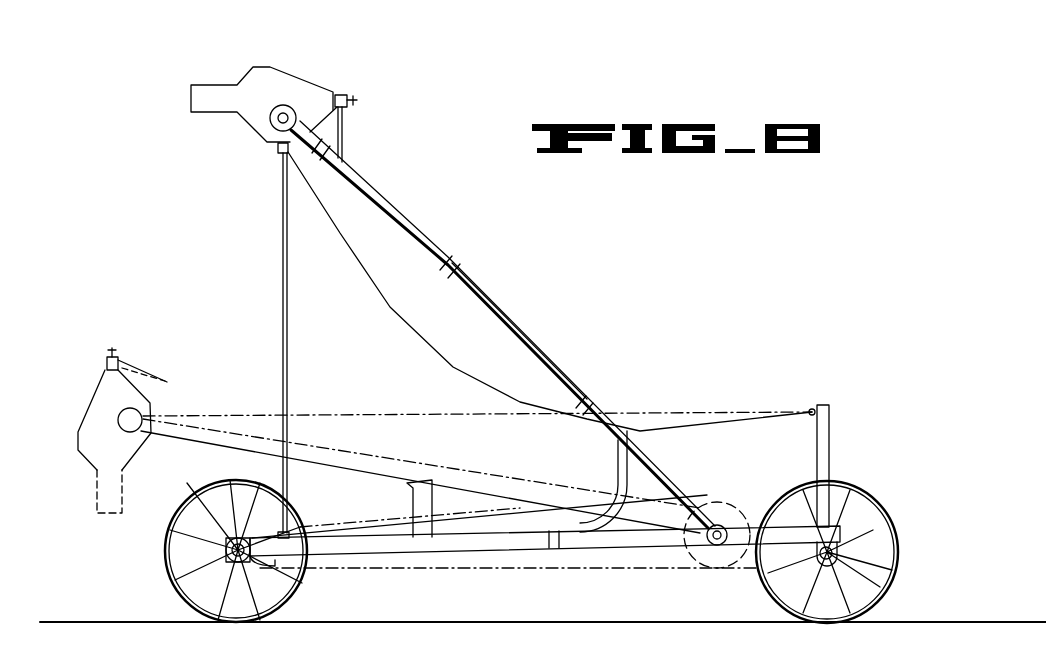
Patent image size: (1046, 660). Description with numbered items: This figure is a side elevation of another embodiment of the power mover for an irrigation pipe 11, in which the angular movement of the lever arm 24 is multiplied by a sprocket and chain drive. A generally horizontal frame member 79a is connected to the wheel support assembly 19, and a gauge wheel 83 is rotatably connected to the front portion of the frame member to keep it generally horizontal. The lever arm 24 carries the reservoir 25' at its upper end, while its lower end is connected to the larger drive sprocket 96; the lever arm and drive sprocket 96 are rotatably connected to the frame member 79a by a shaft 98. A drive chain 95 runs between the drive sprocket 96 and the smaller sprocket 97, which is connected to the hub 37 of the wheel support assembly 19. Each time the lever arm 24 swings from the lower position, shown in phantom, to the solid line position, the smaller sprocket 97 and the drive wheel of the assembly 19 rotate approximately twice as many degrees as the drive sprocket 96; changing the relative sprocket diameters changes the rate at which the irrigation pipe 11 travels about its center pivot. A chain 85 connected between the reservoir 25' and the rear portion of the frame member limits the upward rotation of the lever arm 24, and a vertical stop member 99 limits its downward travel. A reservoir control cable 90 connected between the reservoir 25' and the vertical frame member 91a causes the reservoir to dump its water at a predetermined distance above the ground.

The irrigation pipe 11 is at (224, 536).
The wheel support assembly 19 is at (168, 570).
The lever arm 24 is at (383, 207).
The reservoir 25' is at (196, 266).
The hub 37 is at (226, 548).
The frame member 79a is at (390, 550).
The gauge wheel 83 is at (850, 494).
The chain 85 is at (282, 280).
The reservoir control cable 90 is at (397, 317).
The vertical frame member 91a is at (832, 423).
The drive chain 95 is at (500, 571).
The drive sprocket 96 is at (684, 556).
The smaller sprocket 97 is at (276, 572).
The shaft 98 is at (718, 524).
The vertical stop member 99 is at (411, 493).